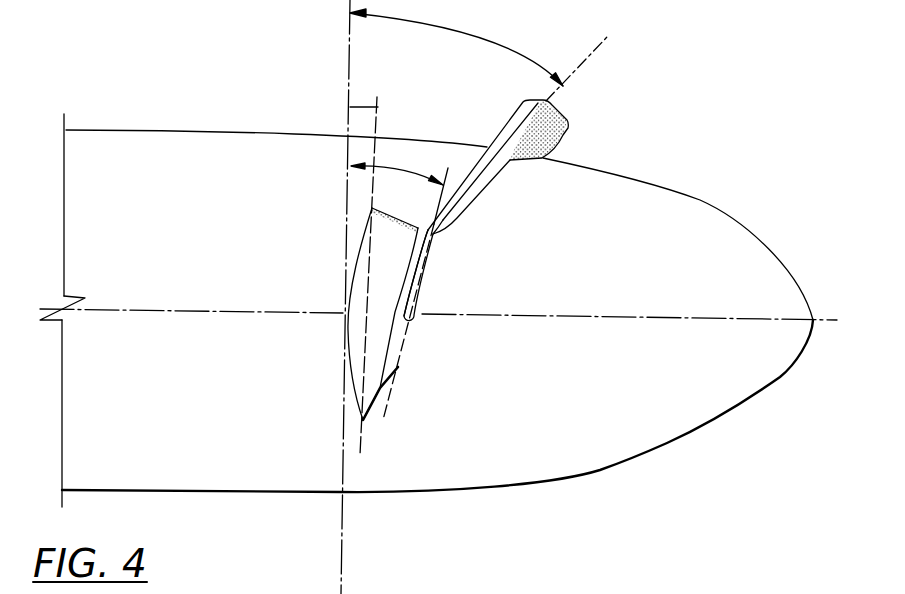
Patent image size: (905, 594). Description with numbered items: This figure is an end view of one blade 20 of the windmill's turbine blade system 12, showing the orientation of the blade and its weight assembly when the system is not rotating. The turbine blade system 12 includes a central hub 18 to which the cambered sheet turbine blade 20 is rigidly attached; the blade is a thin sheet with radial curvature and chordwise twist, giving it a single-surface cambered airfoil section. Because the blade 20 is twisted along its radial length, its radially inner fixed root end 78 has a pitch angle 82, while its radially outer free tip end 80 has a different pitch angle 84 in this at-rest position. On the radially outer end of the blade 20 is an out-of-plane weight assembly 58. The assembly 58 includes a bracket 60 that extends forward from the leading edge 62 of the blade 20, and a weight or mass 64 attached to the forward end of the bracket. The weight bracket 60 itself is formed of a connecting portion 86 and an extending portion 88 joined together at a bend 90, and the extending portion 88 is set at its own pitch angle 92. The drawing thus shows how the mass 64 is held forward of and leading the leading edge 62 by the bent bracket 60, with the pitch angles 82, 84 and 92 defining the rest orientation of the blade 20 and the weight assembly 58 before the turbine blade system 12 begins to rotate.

The turbine blade system 12 is at (732, 76).
The central hub 18 is at (707, 286).
The cambered sheet turbine blade 20 is at (370, 408).
The out-of-plane weight assembly 58 is at (526, 173).
The bracket 60 is at (457, 190).
The leading edge 62 is at (376, 276).
The weight or mass 64 is at (555, 124).
The root end 78 is at (338, 287).
The tip end 80 is at (393, 365).
The root pitch angle 82 is at (357, 104).
The tip pitch angle 84 is at (379, 166).
The connecting portion 86 is at (426, 280).
The extending portion 88 is at (498, 167).
The bend 90 is at (443, 250).
The extending portion pitch angle 92 is at (488, 38).